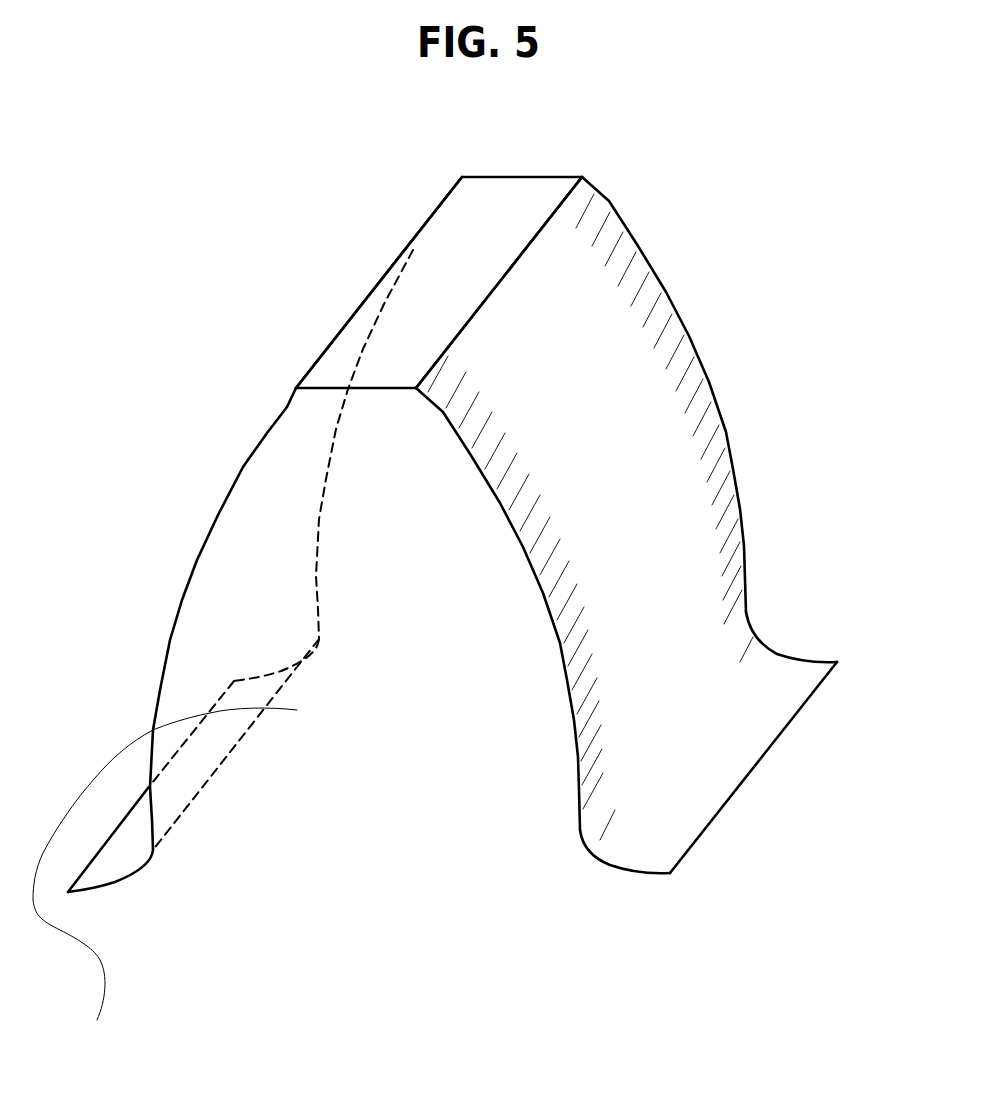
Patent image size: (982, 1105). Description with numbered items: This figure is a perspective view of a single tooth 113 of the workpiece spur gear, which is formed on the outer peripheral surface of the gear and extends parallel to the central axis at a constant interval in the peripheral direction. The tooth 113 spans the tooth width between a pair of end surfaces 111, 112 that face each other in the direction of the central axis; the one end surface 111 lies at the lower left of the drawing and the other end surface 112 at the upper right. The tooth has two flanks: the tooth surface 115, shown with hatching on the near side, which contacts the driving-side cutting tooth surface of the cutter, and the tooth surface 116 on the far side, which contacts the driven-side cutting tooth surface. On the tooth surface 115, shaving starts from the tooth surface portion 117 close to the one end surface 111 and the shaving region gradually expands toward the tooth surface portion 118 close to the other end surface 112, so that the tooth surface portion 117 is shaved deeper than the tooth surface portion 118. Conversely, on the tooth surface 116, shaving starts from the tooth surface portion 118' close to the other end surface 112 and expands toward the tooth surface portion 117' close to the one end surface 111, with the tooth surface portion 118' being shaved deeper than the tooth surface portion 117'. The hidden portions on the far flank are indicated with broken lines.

The one end surface 111 is at (165, 881).
The other end surface 112 is at (628, 350).
The tooth 113 is at (430, 217).
The tooth surface 115 is at (640, 423).
The tooth surface 116 is at (240, 571).
The tooth surface portion 117 is at (708, 742).
The tooth surface portion 117' is at (193, 737).
The tooth surface portion 118 is at (650, 517).
The tooth surface portion 118' is at (344, 444).